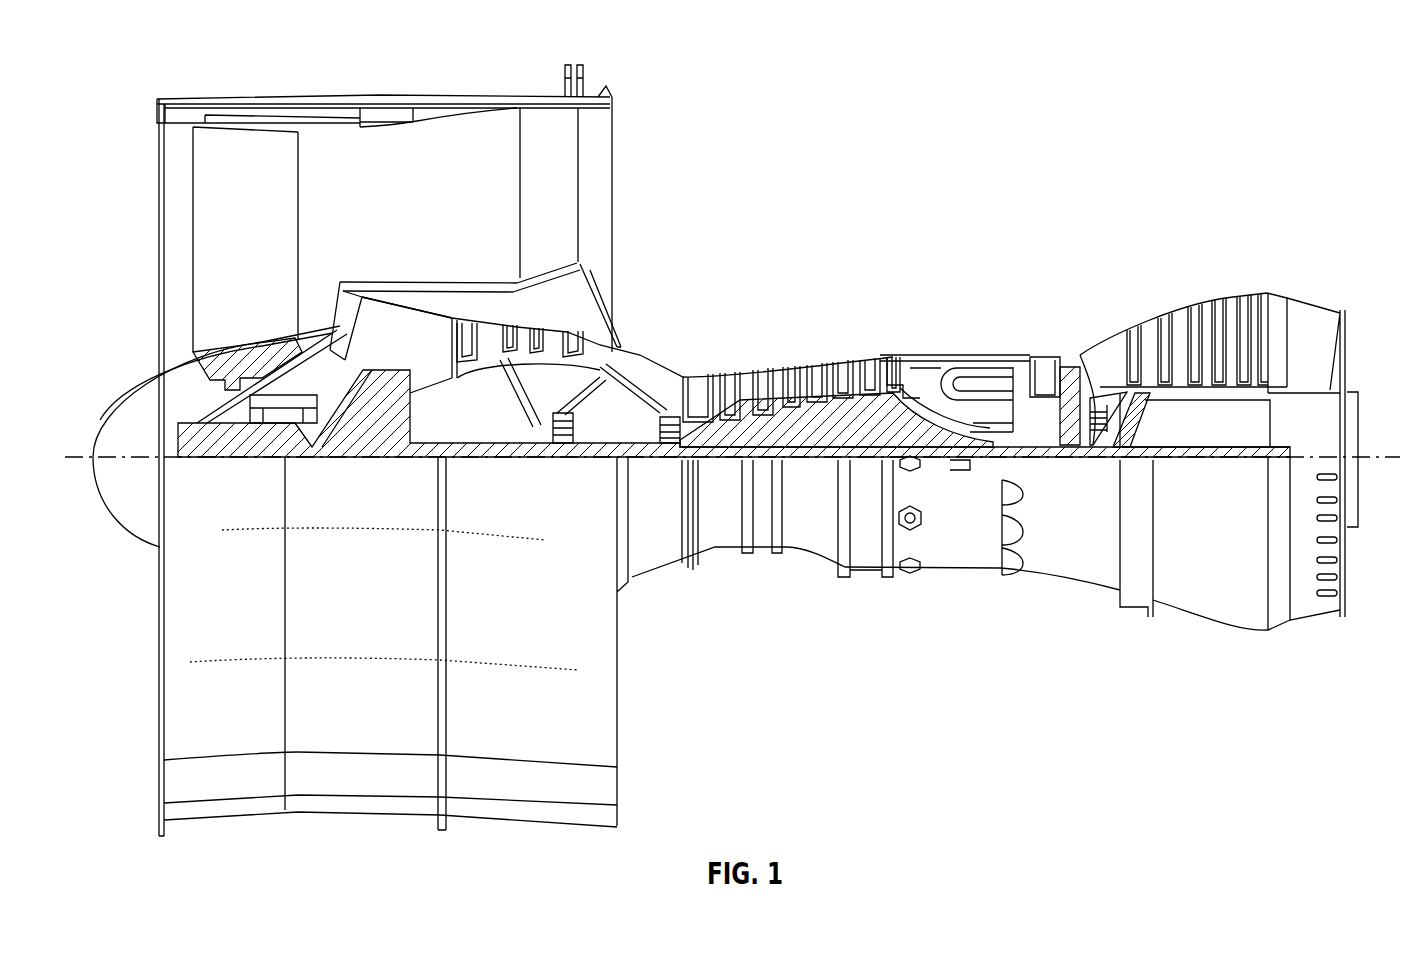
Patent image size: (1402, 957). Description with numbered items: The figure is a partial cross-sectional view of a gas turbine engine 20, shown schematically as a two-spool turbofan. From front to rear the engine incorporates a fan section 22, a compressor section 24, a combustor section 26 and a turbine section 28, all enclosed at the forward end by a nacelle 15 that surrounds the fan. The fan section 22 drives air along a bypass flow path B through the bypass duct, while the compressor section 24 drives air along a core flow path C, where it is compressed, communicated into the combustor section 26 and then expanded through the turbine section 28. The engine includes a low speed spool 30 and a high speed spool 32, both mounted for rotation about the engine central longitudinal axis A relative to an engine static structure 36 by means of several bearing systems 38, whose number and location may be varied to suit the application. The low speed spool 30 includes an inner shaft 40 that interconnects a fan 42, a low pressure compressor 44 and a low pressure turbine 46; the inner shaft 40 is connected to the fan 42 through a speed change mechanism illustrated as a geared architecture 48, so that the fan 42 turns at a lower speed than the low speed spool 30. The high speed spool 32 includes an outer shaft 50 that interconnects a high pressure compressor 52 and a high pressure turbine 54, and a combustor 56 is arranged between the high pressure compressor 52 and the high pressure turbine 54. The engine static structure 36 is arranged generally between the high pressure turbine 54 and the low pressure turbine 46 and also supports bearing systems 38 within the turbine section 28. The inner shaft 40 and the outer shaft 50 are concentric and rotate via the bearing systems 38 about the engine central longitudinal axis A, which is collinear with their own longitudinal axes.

The nacelle 15 is at (385, 97).
The gas turbine engine 20 is at (1198, 122).
The fan section 22 is at (210, 58).
The compressor section 24 is at (820, 278).
The combustor section 26 is at (940, 278).
The turbine section 28 is at (1150, 248).
The low speed spool 30 is at (810, 498).
The high speed spool 32 is at (893, 382).
The engine static structure 36 is at (850, 617).
The bearing systems 38 is at (1083, 461).
The inner shaft 40 is at (630, 459).
The fan 42 is at (247, 468).
The low pressure compressor 44 is at (560, 290).
The low pressure turbine 46 is at (1196, 300).
The geared architecture 48 is at (392, 426).
The outer shaft 50 is at (990, 453).
The high pressure compressor 52 is at (760, 380).
The high pressure turbine 54 is at (1040, 354).
The combustor 56 is at (968, 377).
The engine central longitudinal axis A is at (1365, 458).
The bypass flow path B is at (357, 193).
The core flow path C is at (265, 290).